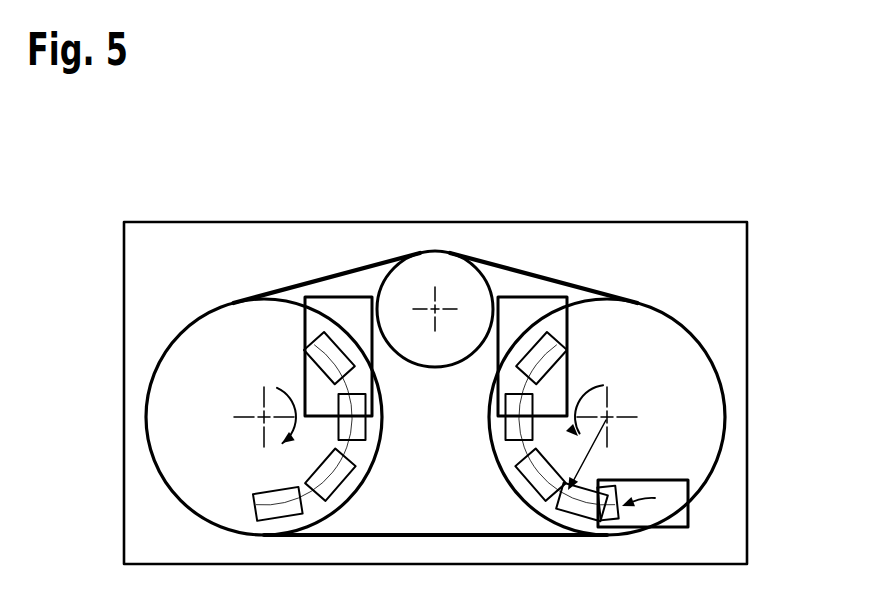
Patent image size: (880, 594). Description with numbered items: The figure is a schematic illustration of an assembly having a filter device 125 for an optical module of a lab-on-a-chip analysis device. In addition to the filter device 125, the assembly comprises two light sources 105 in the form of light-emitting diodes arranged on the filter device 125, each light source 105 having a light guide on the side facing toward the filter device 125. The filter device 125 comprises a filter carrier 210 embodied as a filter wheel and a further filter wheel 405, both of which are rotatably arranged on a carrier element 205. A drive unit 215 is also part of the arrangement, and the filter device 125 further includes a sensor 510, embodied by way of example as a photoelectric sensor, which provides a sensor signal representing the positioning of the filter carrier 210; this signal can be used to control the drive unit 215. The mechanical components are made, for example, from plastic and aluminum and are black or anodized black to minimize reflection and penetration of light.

The filter device 125 is at (112, 206).
The light source 105 is at (338, 297).
The drive unit 215 is at (413, 226).
The carrier element 205 is at (681, 222).
The filter carrier 210 is at (178, 367).
The further filter wheel 405 is at (692, 367).
The sensor 510 is at (688, 516).